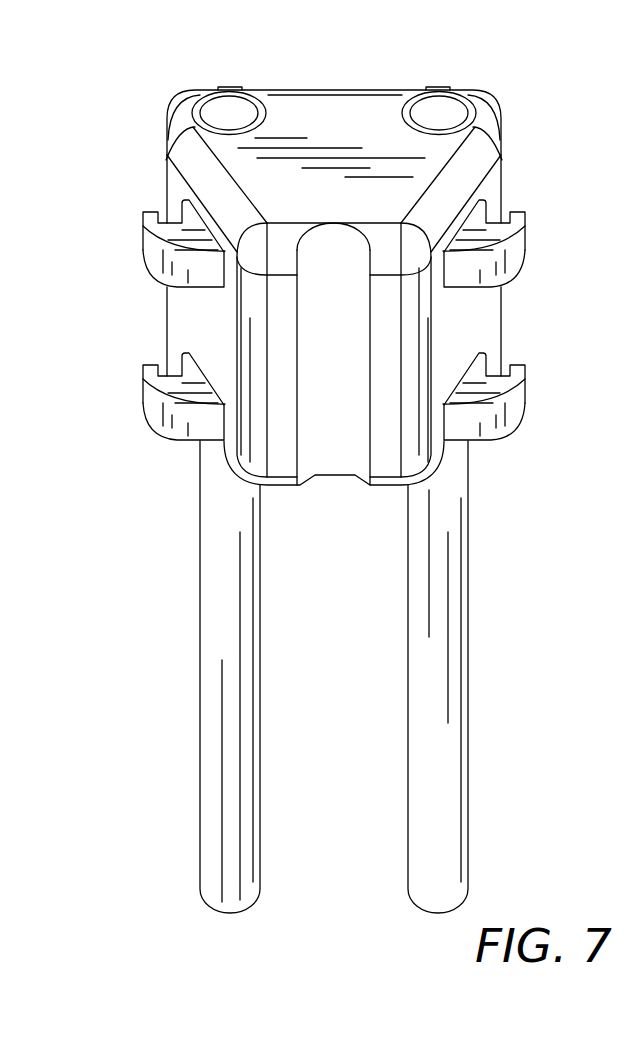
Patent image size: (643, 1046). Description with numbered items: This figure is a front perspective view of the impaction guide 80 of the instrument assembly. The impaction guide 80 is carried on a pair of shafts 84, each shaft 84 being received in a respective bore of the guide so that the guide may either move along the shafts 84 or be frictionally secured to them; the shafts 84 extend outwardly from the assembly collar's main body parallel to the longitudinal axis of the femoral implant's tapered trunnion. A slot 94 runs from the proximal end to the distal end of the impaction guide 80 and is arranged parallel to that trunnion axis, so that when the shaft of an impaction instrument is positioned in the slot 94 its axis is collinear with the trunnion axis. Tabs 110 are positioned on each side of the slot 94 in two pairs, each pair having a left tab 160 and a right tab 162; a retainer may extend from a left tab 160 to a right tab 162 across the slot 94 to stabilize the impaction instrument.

The impaction guide 80 is at (357, 110).
The shaft 84 is at (245, 752).
The slot 94 is at (332, 382).
The tabs 110 is at (143, 220).
The left tab 160 is at (143, 253).
The right tab 162 is at (513, 258).